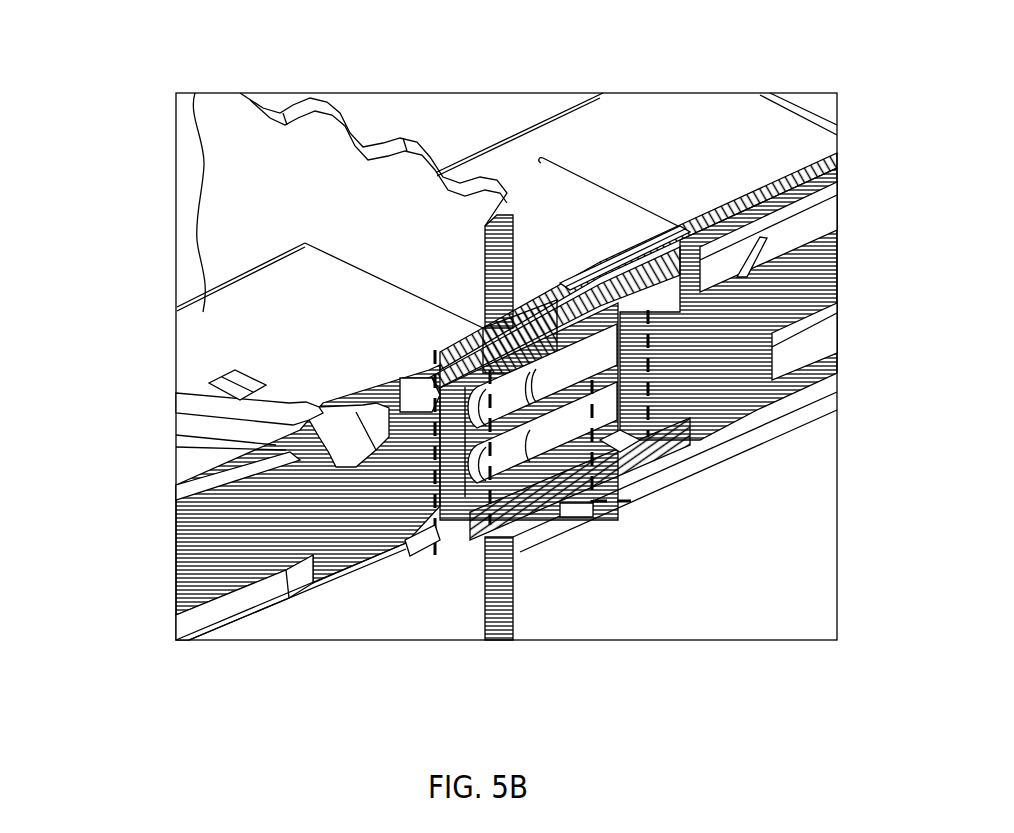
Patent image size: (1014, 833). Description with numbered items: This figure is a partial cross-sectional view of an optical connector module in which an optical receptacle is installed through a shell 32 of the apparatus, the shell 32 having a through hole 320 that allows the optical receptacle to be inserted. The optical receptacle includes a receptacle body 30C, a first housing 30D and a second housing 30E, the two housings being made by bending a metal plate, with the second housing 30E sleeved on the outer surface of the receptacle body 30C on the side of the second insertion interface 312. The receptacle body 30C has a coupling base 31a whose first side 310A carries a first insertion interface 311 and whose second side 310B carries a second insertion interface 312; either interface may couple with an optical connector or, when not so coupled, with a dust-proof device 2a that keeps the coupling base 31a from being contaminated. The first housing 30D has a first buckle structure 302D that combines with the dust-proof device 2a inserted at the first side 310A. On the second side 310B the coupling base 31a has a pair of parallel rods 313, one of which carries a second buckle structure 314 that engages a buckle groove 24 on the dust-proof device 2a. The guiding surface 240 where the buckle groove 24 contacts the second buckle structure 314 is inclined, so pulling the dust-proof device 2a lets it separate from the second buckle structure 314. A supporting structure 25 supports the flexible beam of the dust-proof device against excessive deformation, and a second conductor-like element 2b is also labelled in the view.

The shell 32 is at (213, 90).
The parallel rods 313 is at (643, 252).
The second buckle structure 314 is at (643, 228).
The guiding surface 240 is at (655, 298).
The through hole 320 is at (305, 243).
The second housing 30E is at (724, 156).
The first housing 30D is at (375, 324).
The second conductor 2b is at (299, 407).
The first buckle structure 302D is at (300, 420).
The supporting structure 25 is at (790, 235).
The buckle groove 24 is at (665, 295).
The dust-proof device 2a is at (698, 432).
The coupling base 31a is at (545, 497).
The second side 310B is at (654, 520).
The first side 310A is at (428, 570).
The first insertion interface 311 is at (477, 490).
The receptacle body 30C is at (530, 557).
The second insertion interface 312 is at (603, 445).